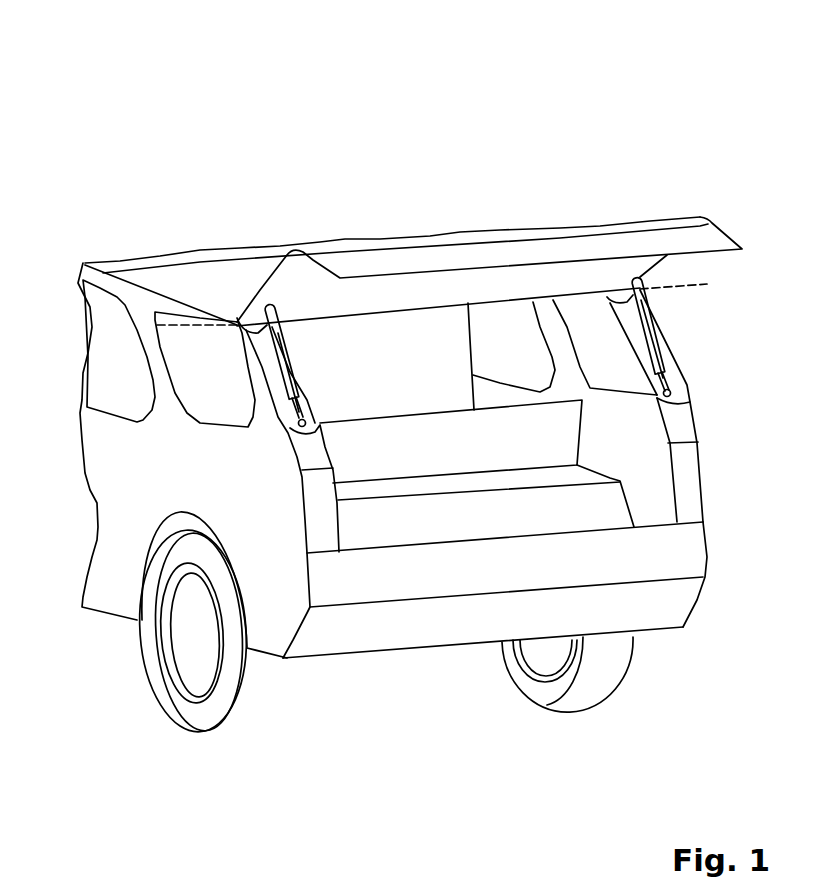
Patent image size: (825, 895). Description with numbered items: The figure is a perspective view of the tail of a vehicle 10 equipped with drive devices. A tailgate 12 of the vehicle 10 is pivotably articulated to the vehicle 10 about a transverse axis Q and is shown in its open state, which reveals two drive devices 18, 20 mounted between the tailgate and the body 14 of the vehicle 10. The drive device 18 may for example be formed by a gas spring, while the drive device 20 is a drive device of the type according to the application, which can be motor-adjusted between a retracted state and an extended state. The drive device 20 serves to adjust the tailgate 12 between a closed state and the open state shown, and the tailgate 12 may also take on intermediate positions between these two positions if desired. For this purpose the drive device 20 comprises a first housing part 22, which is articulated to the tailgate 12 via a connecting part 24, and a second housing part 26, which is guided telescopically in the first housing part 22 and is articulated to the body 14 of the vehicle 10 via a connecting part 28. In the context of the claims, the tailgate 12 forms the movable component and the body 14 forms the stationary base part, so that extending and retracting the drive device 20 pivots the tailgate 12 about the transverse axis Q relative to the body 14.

The vehicle 10 is at (627, 131).
The tailgate 12 is at (704, 240).
The body 14 is at (130, 488).
The drive device 18 is at (674, 349).
The drive device 20 is at (276, 377).
The first housing part 22 is at (277, 340).
The connecting part 24 is at (285, 307).
The second housing part 26 is at (290, 382).
The connecting part 28 is at (305, 422).
The transverse axis Q is at (690, 288).